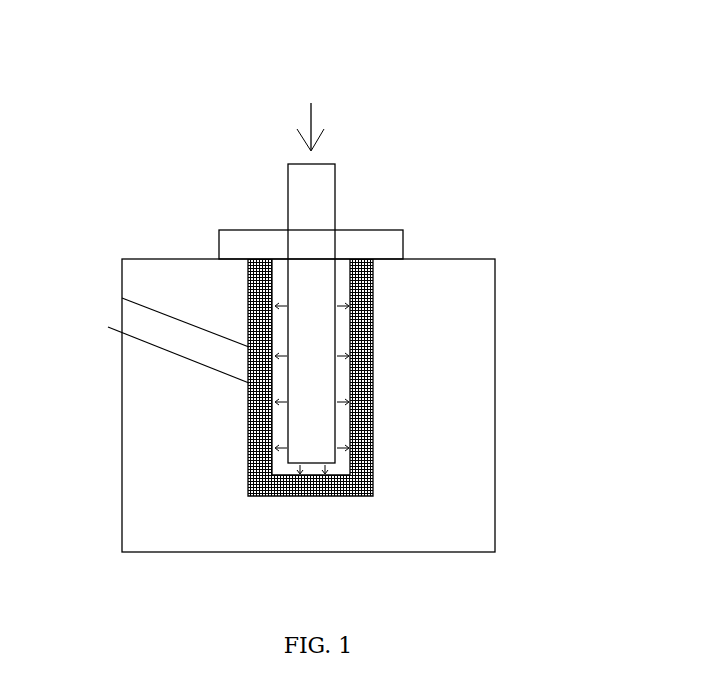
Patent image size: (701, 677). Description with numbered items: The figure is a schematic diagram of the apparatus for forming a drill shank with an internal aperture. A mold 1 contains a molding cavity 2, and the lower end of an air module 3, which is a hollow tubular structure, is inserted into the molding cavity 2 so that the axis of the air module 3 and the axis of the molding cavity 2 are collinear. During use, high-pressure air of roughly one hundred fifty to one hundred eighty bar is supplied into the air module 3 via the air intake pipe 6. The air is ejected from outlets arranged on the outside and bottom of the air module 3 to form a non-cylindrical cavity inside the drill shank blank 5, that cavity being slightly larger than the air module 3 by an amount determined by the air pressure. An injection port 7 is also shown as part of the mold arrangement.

The mold 1 is at (478, 385).
The molding cavity 2 is at (368, 368).
The air module 3 is at (306, 302).
The drill shank blank 5 is at (372, 290).
The air intake pipe 6 is at (322, 153).
The injection port 7 is at (133, 318).